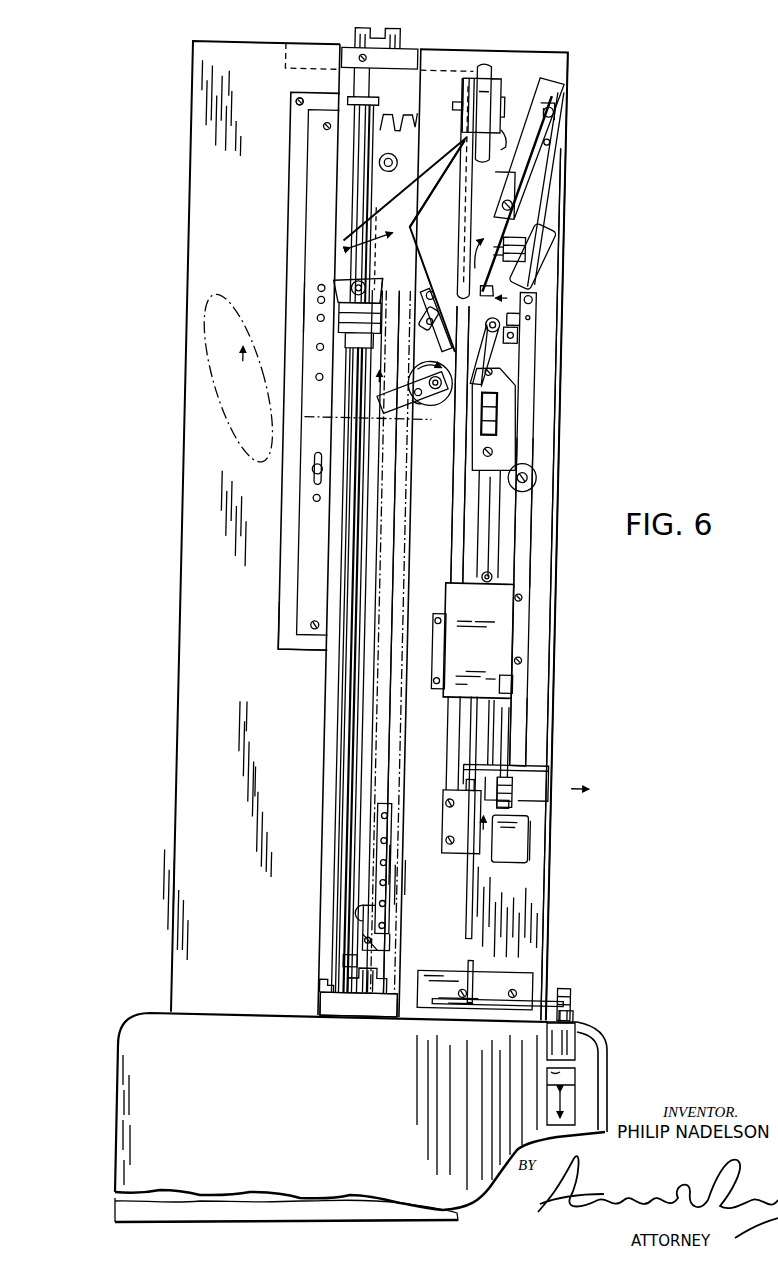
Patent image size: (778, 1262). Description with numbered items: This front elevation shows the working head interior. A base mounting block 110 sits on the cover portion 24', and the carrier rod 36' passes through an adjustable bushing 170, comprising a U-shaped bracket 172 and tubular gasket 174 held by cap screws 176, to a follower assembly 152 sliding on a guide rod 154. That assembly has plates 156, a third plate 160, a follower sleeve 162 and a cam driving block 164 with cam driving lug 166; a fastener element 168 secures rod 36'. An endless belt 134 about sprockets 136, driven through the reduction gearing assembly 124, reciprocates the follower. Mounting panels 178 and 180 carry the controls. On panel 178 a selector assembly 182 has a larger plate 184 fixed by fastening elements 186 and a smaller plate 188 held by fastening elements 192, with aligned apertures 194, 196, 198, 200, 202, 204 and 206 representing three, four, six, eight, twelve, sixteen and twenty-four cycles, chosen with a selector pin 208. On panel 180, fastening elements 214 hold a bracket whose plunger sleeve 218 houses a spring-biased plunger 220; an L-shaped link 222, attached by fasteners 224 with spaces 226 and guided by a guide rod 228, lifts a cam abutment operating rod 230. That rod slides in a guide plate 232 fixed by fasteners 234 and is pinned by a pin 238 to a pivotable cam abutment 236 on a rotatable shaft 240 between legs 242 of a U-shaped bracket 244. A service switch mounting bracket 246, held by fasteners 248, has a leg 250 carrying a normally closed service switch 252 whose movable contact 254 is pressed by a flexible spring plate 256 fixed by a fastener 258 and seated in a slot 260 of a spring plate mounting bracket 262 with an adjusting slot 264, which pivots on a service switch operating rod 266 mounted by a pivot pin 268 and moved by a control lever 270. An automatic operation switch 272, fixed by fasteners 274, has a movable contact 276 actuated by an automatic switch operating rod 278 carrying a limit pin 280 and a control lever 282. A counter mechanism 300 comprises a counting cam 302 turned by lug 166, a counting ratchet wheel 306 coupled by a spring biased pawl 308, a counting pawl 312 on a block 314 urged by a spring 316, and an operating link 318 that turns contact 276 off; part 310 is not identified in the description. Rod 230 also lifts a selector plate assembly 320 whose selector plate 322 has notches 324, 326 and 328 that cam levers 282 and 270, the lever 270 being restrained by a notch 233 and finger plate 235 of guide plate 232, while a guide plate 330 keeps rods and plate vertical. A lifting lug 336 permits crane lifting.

The cover portion 24' is at (386, 1117).
The carrier rod 36' is at (328, 670).
The base mounting block 110 is at (333, 1014).
The transmission or reduction gearing assembly 124 is at (410, 148).
The endless driving chain or belt 134 is at (400, 527).
The driving sprocket 136 is at (388, 905).
The follower assembly 152 is at (349, 192).
The follower assembly guide rod 154 is at (337, 906).
The plates 156 is at (333, 302).
The third plate 160 is at (348, 323).
The follower sleeve 162 is at (353, 158).
The cam driving block 164 is at (340, 290).
The cam driving lug 166 is at (357, 282).
The fastener element 168 is at (388, 297).
The bushing 170 is at (377, 969).
The bracket 172 is at (347, 956).
The gasket 174 is at (360, 990).
The cap screws 176 is at (321, 986).
The mounting panel 178 is at (180, 789).
The mounting panel 180 is at (548, 898).
The selector assembly 182 is at (283, 622).
The larger plate 184 is at (292, 116).
The fastening elements 186 is at (297, 98).
The smaller plate 188 is at (298, 590).
The fastening elements 192 is at (313, 627).
The aperture 194 is at (318, 504).
The aperture 196 is at (312, 472).
The aperture 198 is at (318, 377).
The aperture 200 is at (318, 347).
The aperture 202 is at (318, 318).
The aperture 204 is at (318, 300).
The aperture 206 is at (318, 288).
The selector pin 208 is at (300, 450).
The fastening elements 214 is at (512, 990).
The plunger sleeve 218 is at (552, 1049).
The plunger 220 is at (550, 1109).
The link 222 is at (482, 1005).
The fasteners 224 is at (596, 1012).
The spaces 226 is at (574, 1015).
The guide rod 228 is at (460, 990).
The cam abutment operating rod 230 is at (447, 565).
The guide plate 232 is at (505, 646).
The notch 233 is at (505, 685).
The fasteners 234 is at (437, 681).
The finger plate 235 is at (520, 728).
The pivotable cam abutment 236 is at (480, 152).
The pin 238 is at (459, 103).
The rotatable shaft 240 is at (492, 78).
The legs 242 is at (465, 78).
The U-shaped bracket 244 is at (476, 76).
The service switch mounting bracket 246 is at (549, 82).
The fasteners 248 is at (515, 202).
The leg 250 is at (553, 178).
The service switch 252 is at (556, 250).
The movable contact 254 is at (515, 233).
The flexible spring plate 256 is at (549, 142).
The fastener 258 is at (551, 112).
The slot 260 is at (480, 292).
The service switch spring plate mounting bracket 262 is at (537, 320).
The slot 264 is at (482, 289).
The service switch operating rod 266 is at (527, 456).
The pivot pin 268 is at (537, 482).
The service switch operating rod control lever 270 is at (510, 800).
The automatic operation switch 272 is at (506, 415).
The fasteners 274 is at (503, 372).
The movable contact 276 is at (493, 450).
The automatic switch operating rod 278 is at (490, 554).
The limit pin 280 is at (492, 577).
The automatic switch operating rod control lever 282 is at (470, 931).
The counter mechanism 300 is at (393, 368).
The counting cam 302 is at (348, 248).
The counting ratchet wheel 306 is at (428, 413).
The spring biased pawl 308 is at (434, 337).
The lever 310 is at (433, 298).
The counting pawl 312 is at (495, 343).
The block 314 is at (530, 314).
The spring 316 is at (505, 358).
The operating link 318 is at (427, 408).
The selector plate assembly 320 is at (531, 845).
The selector plate 322 is at (445, 831).
The notch 324 is at (463, 806).
The notch 326 is at (485, 780).
The notch 328 is at (512, 792).
The guide plate 330 is at (552, 771).
The lifting lug 336 is at (357, 27).